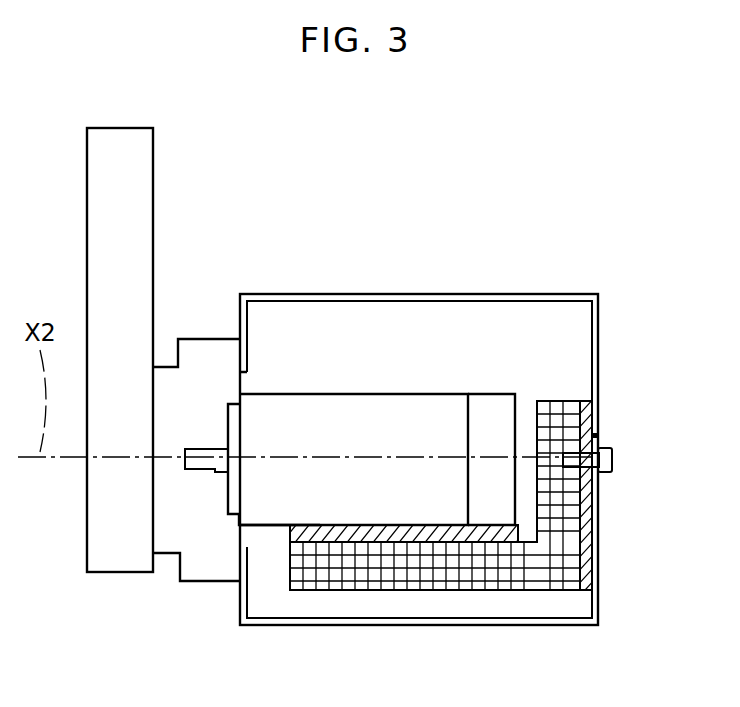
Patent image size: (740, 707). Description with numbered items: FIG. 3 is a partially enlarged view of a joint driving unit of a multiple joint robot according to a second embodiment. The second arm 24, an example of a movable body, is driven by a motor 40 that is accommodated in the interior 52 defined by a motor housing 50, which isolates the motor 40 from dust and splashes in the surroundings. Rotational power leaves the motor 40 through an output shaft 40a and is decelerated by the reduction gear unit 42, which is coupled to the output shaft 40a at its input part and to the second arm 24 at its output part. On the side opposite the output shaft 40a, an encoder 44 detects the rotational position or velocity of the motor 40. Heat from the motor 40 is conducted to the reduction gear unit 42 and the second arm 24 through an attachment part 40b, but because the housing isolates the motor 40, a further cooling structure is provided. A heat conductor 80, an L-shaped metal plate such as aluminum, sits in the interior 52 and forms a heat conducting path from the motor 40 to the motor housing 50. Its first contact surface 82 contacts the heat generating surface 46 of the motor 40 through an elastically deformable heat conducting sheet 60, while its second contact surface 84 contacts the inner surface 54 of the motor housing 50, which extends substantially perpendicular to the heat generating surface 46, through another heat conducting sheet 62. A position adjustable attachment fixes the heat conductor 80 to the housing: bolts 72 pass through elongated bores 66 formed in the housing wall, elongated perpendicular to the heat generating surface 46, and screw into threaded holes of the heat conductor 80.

The second arm 24 is at (153, 203).
The reduction gear unit 42 is at (210, 338).
The motor housing 50 is at (445, 441).
The interior 52 is at (304, 341).
The inner surface 54 is at (590, 322).
The heat conducting sheet 60 is at (292, 528).
The motor 40 is at (296, 444).
The output shaft 40a is at (203, 469).
The attachment part 40b is at (232, 503).
The encoder 44 is at (492, 390).
The heat generating surface 46 is at (372, 525).
The heat conductor 80 is at (544, 590).
The first contact surface 82 is at (448, 540).
The second contact surface 84 is at (582, 562).
The heat conducting sheet 62 is at (586, 398).
The bolt 72 is at (613, 453).
The elongated bore 66 is at (592, 475).